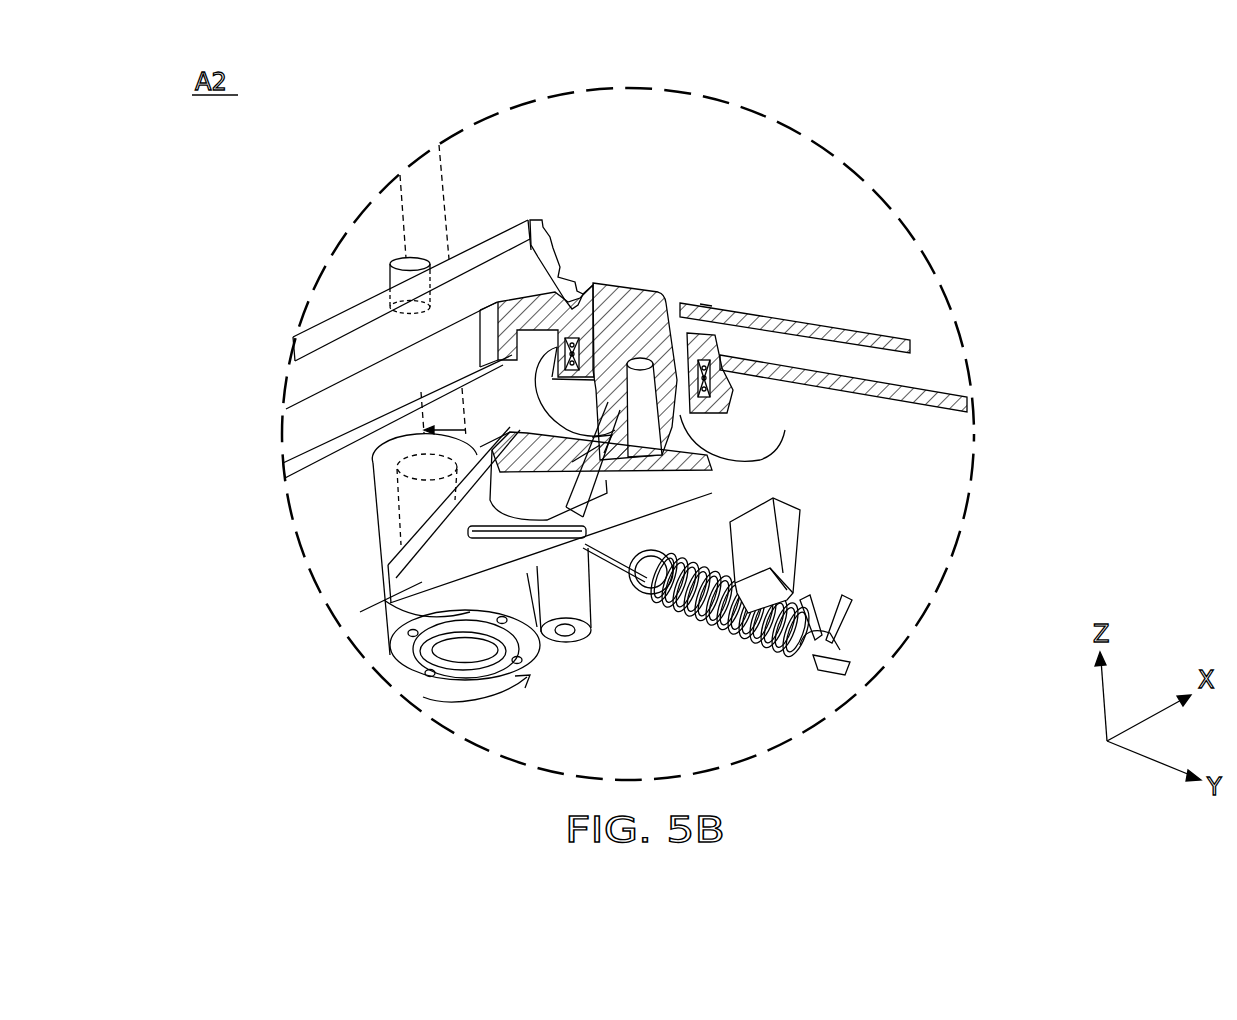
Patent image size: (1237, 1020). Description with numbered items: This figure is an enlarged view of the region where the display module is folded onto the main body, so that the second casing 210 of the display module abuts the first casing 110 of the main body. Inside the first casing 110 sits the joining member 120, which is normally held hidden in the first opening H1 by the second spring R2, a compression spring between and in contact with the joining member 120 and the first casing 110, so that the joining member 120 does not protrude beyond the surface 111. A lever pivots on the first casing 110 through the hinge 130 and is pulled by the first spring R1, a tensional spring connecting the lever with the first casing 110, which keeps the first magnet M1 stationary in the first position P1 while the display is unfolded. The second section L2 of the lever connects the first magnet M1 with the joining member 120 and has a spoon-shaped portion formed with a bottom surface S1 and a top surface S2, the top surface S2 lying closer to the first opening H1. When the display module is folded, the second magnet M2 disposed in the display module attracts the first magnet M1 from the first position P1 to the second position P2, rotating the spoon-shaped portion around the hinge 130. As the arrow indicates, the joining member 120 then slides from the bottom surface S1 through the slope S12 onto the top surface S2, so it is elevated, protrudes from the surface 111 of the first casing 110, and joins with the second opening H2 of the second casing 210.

The second casing 210 is at (530, 218).
The second opening H2 is at (581, 300).
The joining member 120 is at (643, 293).
The first opening H1 is at (703, 306).
The second spring R2 is at (763, 313).
The surface 111 is at (925, 362).
The top surface S2 is at (700, 440).
The first casing 110 is at (928, 470).
The bottom surface S1 is at (423, 413).
The slope S12 is at (430, 391).
The second magnet M2 is at (388, 268).
The first position P1 is at (450, 225).
The second position P2 is at (398, 236).
The first magnet M1 is at (397, 490).
The second section L2 is at (420, 582).
The hinge 130 is at (462, 648).
The first spring R1 is at (755, 645).